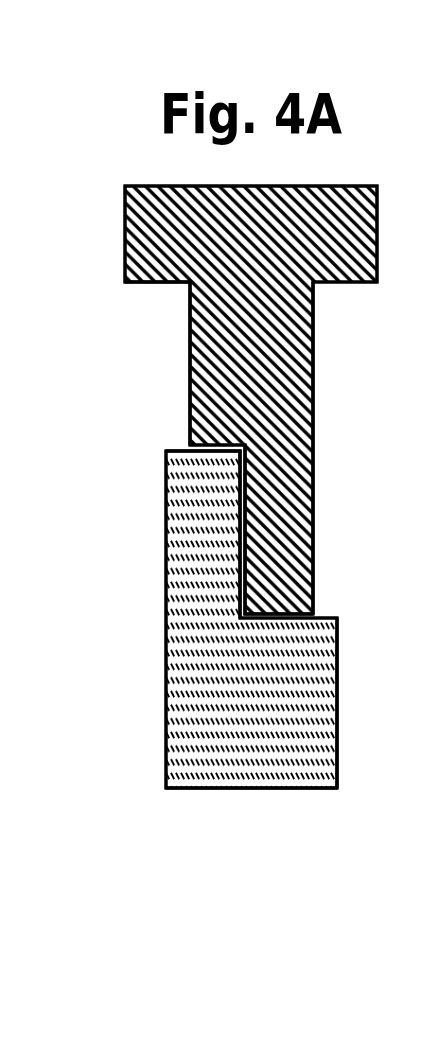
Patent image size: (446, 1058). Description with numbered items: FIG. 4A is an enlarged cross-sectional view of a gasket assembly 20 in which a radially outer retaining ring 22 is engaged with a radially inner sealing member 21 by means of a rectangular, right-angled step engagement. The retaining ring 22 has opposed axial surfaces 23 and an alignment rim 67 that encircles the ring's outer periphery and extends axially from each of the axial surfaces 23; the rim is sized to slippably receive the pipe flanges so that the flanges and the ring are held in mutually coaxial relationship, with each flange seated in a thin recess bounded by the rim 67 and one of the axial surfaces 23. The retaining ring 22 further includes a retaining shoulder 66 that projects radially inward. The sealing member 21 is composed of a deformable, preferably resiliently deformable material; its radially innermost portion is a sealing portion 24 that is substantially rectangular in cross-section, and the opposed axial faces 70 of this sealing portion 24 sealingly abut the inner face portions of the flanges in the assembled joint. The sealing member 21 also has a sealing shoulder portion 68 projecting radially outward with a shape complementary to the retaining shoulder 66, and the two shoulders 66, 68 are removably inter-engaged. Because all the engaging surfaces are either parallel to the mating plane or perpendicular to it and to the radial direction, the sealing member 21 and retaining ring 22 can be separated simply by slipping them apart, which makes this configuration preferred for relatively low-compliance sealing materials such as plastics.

The gasket assembly 20 is at (345, 822).
The sealing member 21 is at (337, 658).
The retaining ring 22 is at (322, 391).
The axial surfaces 23 is at (190, 376).
The sealing portion 24 is at (273, 733).
The retaining shoulder 66 is at (293, 557).
The alignment rim 67 is at (170, 283).
The sealing shoulder portion 68 is at (190, 540).
The axial faces 70 is at (337, 735).